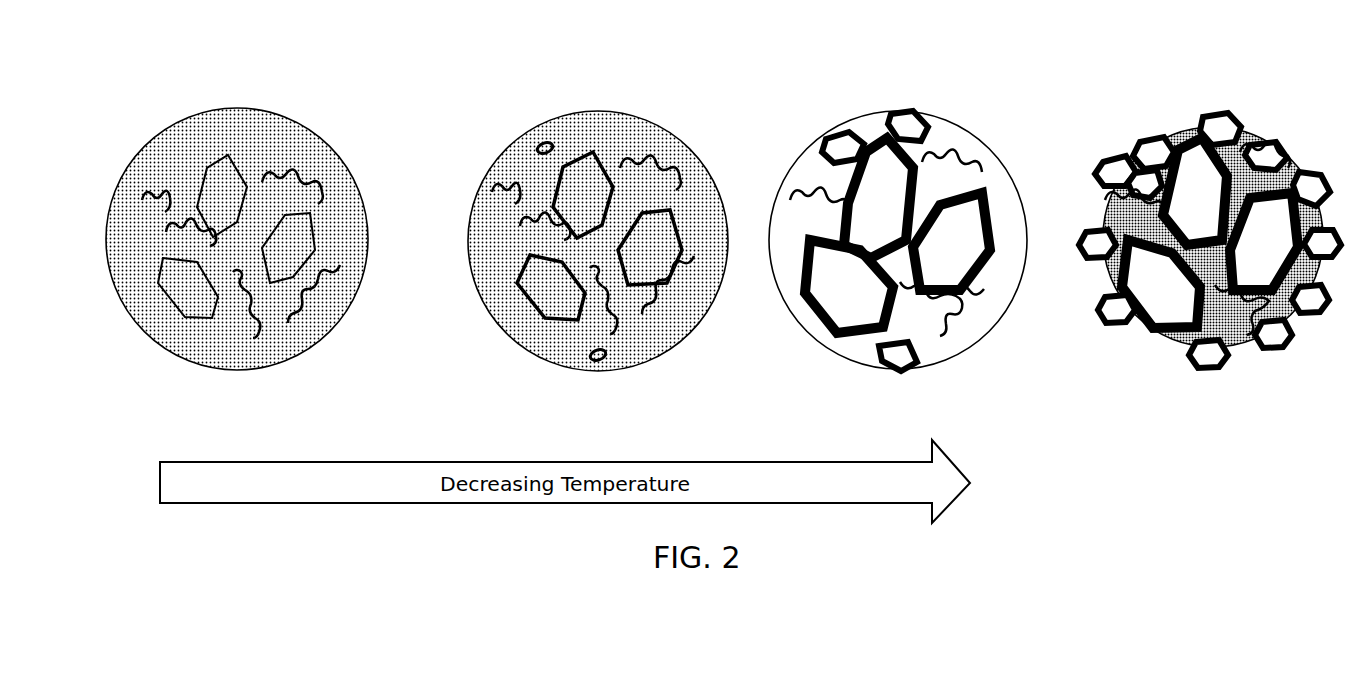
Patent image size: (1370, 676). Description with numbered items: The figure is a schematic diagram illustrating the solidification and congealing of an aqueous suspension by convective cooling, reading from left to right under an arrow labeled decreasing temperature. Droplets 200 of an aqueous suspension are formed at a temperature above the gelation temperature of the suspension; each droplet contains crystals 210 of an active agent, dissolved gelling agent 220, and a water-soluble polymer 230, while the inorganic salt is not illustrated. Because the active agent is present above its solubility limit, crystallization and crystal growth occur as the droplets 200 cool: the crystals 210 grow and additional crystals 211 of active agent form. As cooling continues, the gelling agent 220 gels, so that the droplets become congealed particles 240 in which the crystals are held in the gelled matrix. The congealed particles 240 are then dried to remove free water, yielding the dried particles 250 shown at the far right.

The droplets 200 is at (266, 82).
The crystals 210 is at (214, 158).
The additional crystals 211 is at (537, 143).
The dissolved gelling agent 220 is at (198, 342).
The water-soluble polymer 230 is at (266, 332).
The congealed particles 240 is at (903, 84).
The dried particles 250 is at (1215, 84).